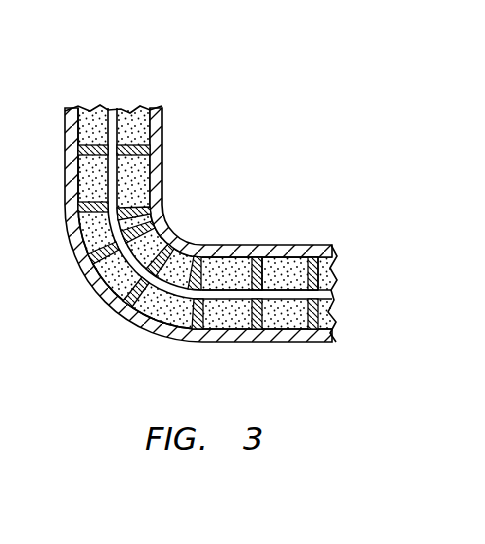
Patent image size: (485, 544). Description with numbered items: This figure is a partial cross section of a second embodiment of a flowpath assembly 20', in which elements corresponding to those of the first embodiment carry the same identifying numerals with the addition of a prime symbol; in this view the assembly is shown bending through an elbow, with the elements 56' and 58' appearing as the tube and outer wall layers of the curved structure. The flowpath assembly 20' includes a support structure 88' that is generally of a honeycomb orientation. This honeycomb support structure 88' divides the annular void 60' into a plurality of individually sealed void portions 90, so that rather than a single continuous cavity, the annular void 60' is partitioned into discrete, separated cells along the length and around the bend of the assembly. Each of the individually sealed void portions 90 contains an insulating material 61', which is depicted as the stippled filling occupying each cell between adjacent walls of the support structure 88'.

The flowpath assembly 20' is at (203, 222).
The inner tube 56' is at (223, 164).
The outer wall 58' is at (198, 235).
The annular void 60' is at (244, 240).
The insulating material 61' is at (301, 238).
The support structure 88' is at (214, 352).
The individually sealed void portions 90 is at (198, 250).